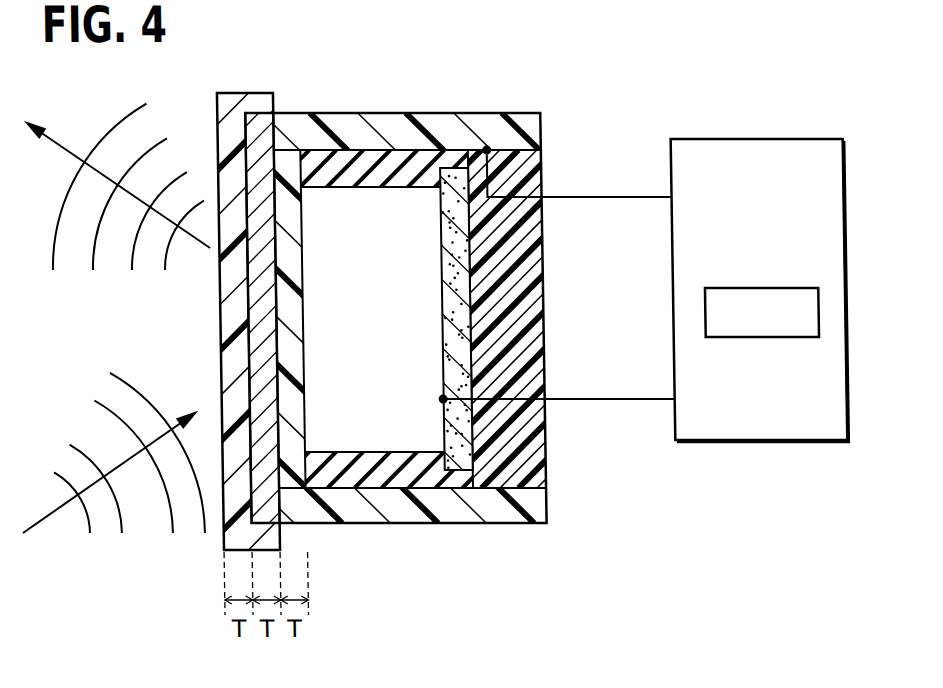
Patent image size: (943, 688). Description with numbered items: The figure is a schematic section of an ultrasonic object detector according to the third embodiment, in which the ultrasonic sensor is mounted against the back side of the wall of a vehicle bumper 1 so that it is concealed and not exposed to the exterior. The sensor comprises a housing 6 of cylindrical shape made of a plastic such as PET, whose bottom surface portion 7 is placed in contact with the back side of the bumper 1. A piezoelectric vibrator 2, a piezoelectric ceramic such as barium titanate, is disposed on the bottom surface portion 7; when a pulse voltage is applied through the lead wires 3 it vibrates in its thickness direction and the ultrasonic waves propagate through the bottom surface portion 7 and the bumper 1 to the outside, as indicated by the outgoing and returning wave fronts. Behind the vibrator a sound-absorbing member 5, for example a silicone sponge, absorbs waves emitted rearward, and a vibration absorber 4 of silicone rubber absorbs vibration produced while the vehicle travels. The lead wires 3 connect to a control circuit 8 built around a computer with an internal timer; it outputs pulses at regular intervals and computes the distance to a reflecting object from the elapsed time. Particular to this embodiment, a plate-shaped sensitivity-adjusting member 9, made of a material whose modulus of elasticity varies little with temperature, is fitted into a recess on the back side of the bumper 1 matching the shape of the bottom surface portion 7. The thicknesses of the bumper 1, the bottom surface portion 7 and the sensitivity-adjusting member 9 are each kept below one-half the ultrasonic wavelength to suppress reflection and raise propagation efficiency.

The bumper 1 is at (242, 128).
The piezoelectric vibrator 2 is at (364, 203).
The lead wires 3 is at (625, 197).
The vibration absorber 4 is at (510, 457).
The sound-absorbing member 5 is at (446, 485).
The housing 6 is at (495, 133).
The bottom surface portion 7 is at (284, 267).
The control circuit 8 is at (750, 139).
The sensitivity-adjusting member 9 is at (260, 461).